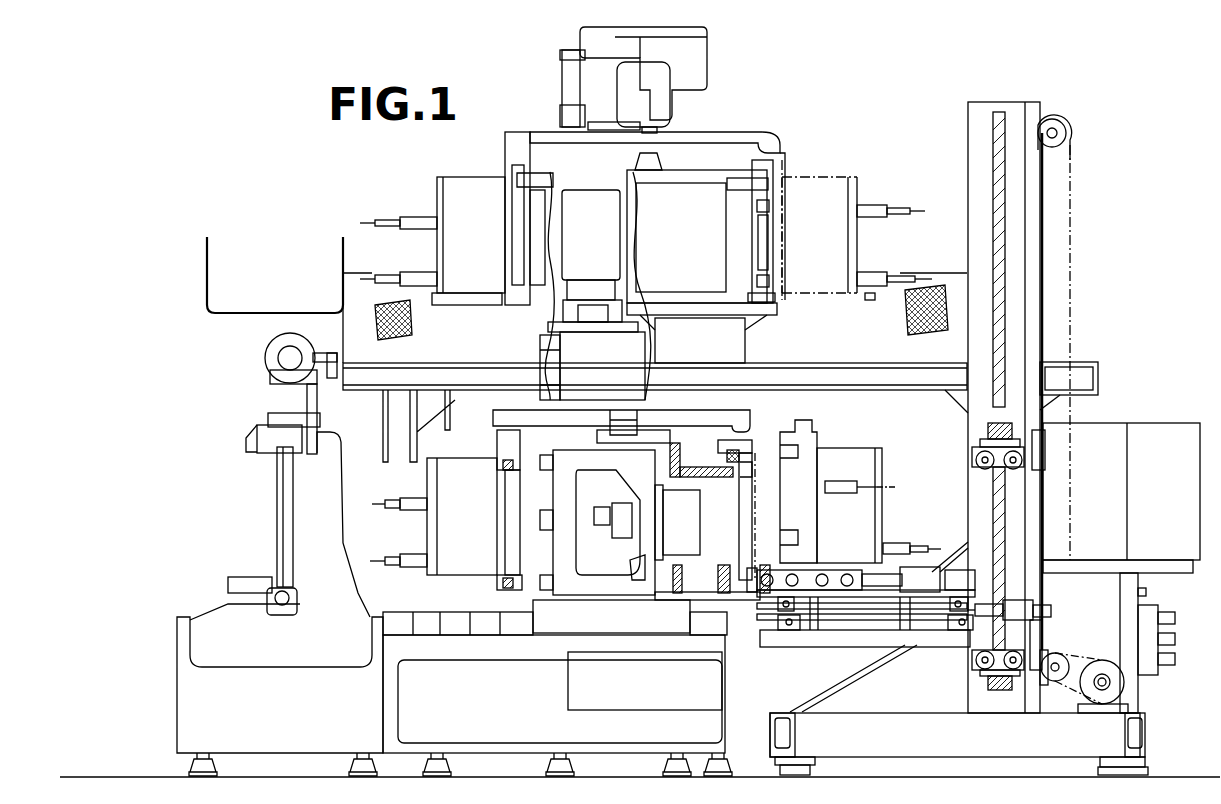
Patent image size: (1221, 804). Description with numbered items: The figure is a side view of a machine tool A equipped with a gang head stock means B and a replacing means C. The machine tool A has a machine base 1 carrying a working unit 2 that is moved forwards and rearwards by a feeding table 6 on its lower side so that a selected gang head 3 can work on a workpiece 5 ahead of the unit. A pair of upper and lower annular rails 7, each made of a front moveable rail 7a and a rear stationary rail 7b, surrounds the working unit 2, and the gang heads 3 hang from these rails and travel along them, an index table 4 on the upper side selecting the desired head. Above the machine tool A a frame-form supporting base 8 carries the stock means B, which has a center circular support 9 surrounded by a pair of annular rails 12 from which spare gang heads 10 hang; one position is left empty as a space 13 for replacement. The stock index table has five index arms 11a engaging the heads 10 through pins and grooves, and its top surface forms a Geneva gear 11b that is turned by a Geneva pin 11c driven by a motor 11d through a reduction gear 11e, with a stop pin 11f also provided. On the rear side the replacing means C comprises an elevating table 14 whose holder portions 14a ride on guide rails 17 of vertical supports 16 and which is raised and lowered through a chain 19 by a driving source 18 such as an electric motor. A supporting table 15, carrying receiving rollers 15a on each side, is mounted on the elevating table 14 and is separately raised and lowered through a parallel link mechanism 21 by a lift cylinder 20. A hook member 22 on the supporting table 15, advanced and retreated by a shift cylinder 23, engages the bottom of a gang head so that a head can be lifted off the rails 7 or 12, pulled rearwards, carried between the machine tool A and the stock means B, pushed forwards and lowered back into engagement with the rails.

The machine base 1 is at (500, 753).
The working unit 2 is at (598, 583).
The gang head 3 is at (427, 548).
The index table 4 is at (495, 414).
The workpiece 5 is at (320, 493).
The feeding table 6 is at (648, 620).
The annular rail 7 is at (497, 445).
The front moveable rail 7a is at (503, 466).
The rear stationary rail 7b is at (737, 460).
The supporting base 8 is at (450, 372).
The center circular support 9 is at (735, 342).
The gang head 10 is at (450, 197).
The index arm 11a is at (768, 133).
The Geneva gear 11b is at (680, 128).
The Geneva pin 11c is at (595, 279).
The motor 11d is at (690, 62).
The reduction gear 11e is at (597, 73).
The stop pin 11f is at (567, 128).
The annular rail 12 is at (530, 147).
The space 13 is at (788, 152).
The elevating table 14 is at (773, 640).
The holder portion 14a is at (1017, 522).
The supporting table 15 is at (838, 570).
The receiving rollers 15a is at (777, 573).
The vertical support 16 is at (968, 128).
The guide rail 17 is at (1000, 213).
The driving source 18 is at (1120, 683).
The chain 19 is at (1068, 318).
The lift cylinder 20 is at (1015, 612).
The parallel link mechanism 21 is at (805, 623).
The hook member 22 is at (885, 577).
The shift cylinder 23 is at (932, 575).
The machine tool A is at (517, 405).
The stock means B is at (737, 120).
The replacing means C is at (843, 652).